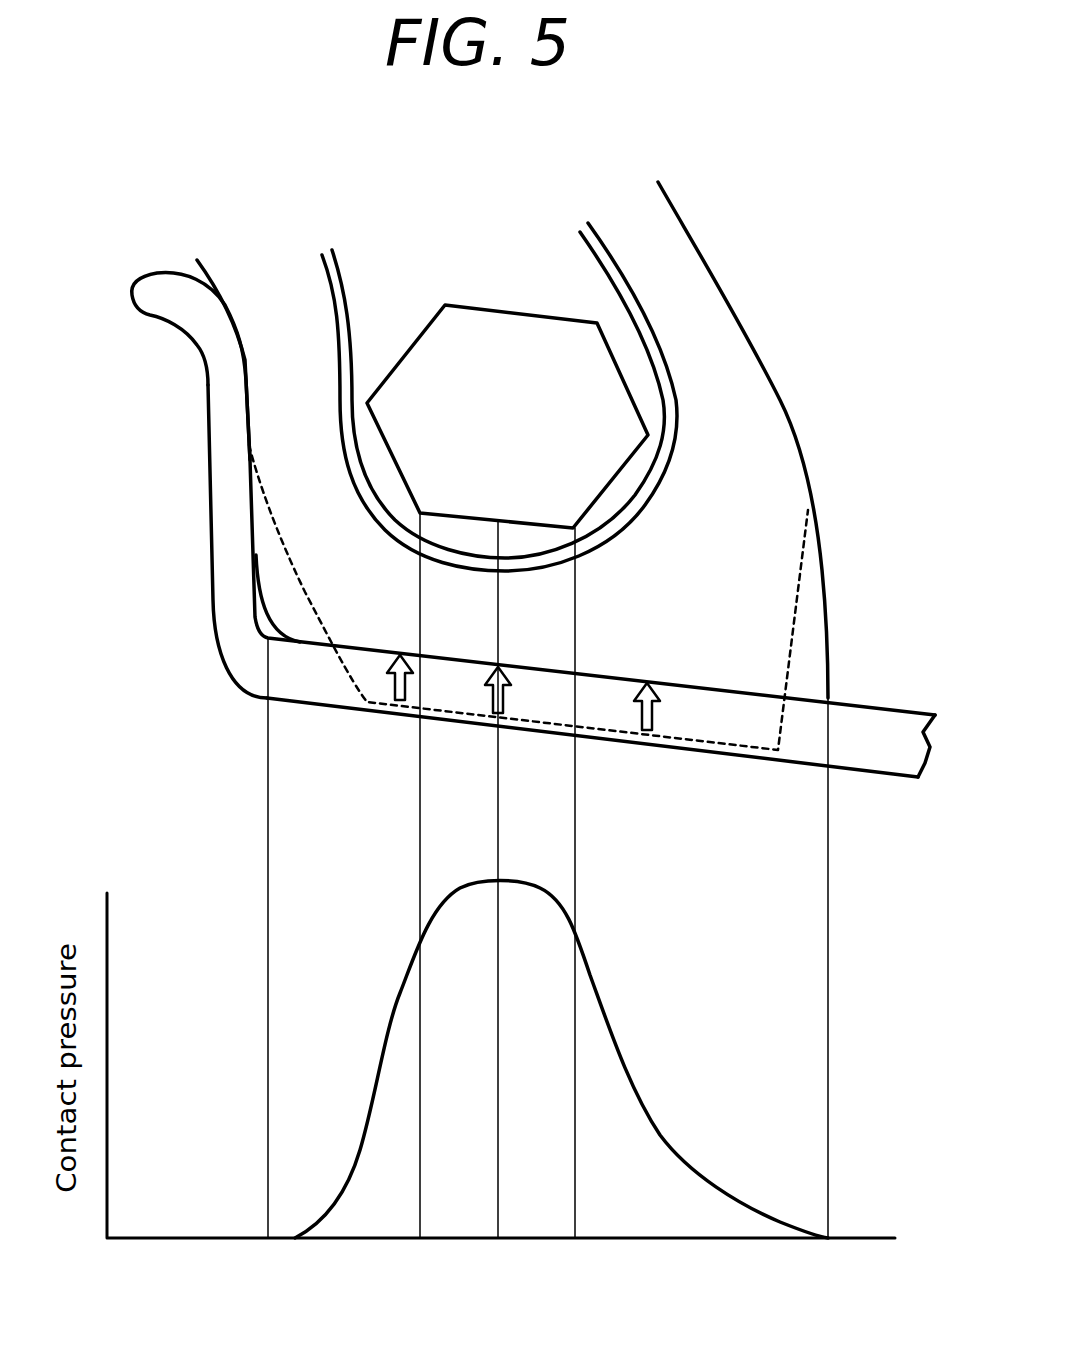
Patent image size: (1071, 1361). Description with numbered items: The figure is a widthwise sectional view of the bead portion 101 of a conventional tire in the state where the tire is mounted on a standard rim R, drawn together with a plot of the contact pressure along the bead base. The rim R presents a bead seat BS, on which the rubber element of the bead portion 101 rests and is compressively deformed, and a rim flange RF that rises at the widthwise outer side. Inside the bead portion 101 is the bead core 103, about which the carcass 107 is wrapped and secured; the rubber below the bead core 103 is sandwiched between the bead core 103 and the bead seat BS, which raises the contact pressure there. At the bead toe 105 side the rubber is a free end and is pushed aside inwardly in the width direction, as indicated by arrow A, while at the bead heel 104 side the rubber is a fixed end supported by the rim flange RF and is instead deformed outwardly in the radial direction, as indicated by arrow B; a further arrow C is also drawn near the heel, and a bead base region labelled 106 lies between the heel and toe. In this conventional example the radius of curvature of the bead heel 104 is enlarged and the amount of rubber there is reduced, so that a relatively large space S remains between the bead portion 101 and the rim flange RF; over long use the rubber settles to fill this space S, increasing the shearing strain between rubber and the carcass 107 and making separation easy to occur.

The bead portion 101 is at (743, 303).
The bead core 103 is at (572, 408).
The bead heel 104 is at (293, 641).
The bead toe 105 is at (828, 698).
The bead base 106 is at (723, 692).
The carcass 107 is at (617, 265).
The rim R is at (210, 485).
The rim flange RF is at (223, 368).
The space S is at (260, 617).
The bead seat BS is at (865, 752).
The arrow A is at (705, 665).
The arrow B is at (375, 572).
The direction C is at (360, 562).